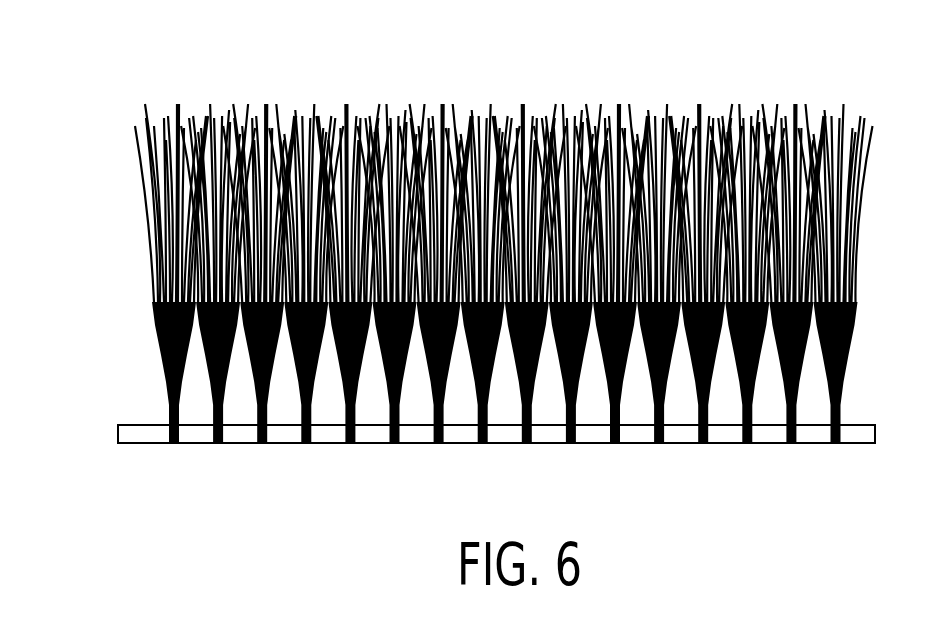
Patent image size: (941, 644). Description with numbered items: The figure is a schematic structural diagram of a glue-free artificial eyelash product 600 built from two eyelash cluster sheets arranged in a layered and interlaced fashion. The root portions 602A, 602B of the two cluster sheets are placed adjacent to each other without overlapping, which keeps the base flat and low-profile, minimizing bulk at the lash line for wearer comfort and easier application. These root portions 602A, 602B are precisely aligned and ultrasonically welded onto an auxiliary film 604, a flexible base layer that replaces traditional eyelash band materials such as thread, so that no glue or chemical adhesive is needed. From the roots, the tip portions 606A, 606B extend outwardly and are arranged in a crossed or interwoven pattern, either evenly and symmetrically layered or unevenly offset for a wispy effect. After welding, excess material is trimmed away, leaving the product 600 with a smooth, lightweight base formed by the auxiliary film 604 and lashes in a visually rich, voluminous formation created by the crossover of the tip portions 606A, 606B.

The glue-free artificial eyelash product 600 is at (495, 271).
The root portion 602A is at (173, 443).
The root portion 602B is at (220, 443).
The auxiliary film 604 is at (732, 437).
The tip portion 606A is at (172, 147).
The tip portion 606B is at (218, 147).